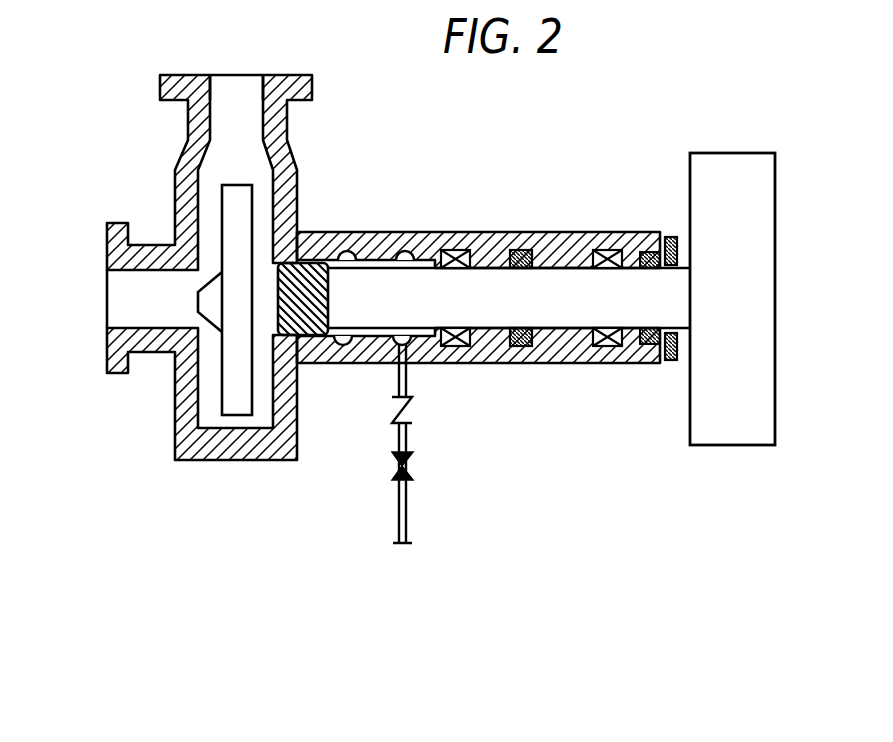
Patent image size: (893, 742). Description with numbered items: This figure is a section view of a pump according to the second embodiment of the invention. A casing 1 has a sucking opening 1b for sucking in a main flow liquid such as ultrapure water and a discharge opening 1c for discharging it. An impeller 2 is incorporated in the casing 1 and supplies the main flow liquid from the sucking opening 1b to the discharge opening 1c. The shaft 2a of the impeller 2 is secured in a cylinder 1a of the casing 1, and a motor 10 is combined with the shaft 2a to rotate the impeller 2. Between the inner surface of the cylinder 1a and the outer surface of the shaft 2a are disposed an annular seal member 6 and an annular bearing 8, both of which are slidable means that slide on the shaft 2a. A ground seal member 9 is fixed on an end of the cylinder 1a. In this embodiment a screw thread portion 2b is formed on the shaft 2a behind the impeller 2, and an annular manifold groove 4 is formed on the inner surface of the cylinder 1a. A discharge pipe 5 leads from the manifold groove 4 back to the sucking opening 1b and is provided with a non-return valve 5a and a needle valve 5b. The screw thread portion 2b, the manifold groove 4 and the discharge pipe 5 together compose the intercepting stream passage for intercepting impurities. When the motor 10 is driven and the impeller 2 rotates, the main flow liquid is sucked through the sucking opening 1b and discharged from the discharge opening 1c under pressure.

The casing 1 is at (293, 78).
The cylinder 1a is at (446, 232).
The sucking opening 1b is at (107, 300).
The discharge opening 1c is at (240, 72).
The impeller 2 is at (237, 415).
The shaft 2a is at (550, 300).
The screw thread portion 2b is at (310, 230).
The annular manifold groove 4 is at (394, 232).
The discharge pipe 5 is at (412, 472).
The non-return valve 5a is at (410, 412).
The needle valve 5b is at (406, 528).
The annular seal member 6 is at (525, 232).
The annular bearing 8 is at (471, 232).
The ground seal member 9 is at (672, 237).
The motor 10 is at (722, 152).